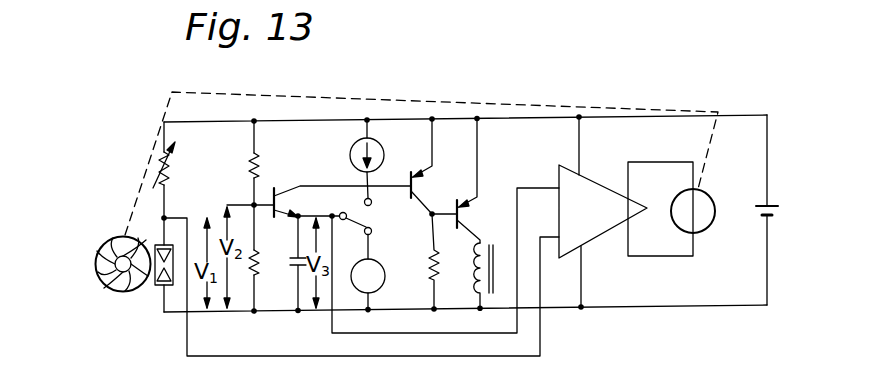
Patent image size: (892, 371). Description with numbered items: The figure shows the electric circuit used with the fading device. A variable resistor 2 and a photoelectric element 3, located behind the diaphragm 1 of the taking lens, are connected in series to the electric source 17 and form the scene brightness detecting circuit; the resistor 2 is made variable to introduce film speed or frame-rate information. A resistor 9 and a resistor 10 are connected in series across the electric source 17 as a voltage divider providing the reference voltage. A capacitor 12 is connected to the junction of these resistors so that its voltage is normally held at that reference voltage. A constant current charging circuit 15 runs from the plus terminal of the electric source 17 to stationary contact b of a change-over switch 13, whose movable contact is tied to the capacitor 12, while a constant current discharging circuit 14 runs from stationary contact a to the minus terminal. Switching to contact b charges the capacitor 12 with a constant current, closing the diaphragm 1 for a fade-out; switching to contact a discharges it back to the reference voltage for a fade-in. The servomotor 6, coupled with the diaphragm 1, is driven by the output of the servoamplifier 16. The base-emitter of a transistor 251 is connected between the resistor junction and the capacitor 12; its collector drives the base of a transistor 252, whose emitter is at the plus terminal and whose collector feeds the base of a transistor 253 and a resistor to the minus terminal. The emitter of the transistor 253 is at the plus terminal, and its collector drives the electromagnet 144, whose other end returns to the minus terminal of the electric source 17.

The diaphragm 1 is at (118, 291).
The resistor 2 is at (177, 179).
The photoelectric element 3 is at (160, 288).
The servomotor 6 is at (700, 233).
The resistor 9 is at (250, 164).
The resistor 10 is at (250, 274).
The capacitor 12 is at (290, 263).
The change-over switch 13 is at (333, 212).
The constant current discharging circuit 14 is at (395, 260).
The constant current charging circuit 15 is at (385, 157).
The servoamplifier 16 is at (595, 237).
The electric source 17 is at (778, 211).
The electromagnet 144 is at (497, 268).
The transistor 251 is at (276, 187).
The transistor 252 is at (420, 184).
The transistor 253 is at (470, 210).